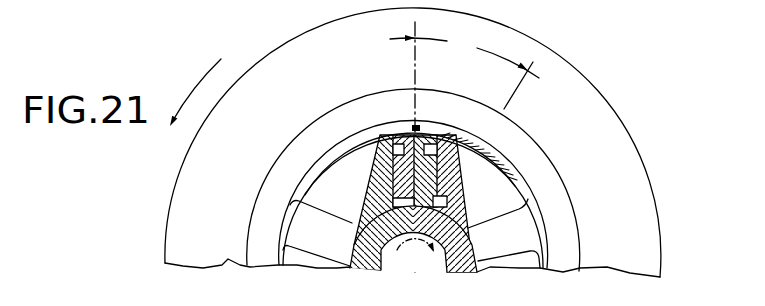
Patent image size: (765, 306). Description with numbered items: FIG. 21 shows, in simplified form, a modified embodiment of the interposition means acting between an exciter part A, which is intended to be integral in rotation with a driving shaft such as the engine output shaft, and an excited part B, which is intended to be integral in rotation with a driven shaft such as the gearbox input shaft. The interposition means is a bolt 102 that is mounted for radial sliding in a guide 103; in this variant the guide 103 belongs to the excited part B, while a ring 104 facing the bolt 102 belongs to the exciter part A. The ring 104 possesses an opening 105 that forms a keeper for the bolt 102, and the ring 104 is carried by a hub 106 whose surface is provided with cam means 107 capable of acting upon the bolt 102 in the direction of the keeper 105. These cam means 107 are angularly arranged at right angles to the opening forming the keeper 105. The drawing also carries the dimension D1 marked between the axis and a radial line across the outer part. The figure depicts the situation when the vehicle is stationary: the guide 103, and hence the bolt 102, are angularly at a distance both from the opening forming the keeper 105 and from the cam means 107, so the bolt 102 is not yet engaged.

The bolt 102 is at (417, 124).
The guide 103 is at (461, 150).
The ring 104 is at (350, 132).
The opening forming a keeper 105 is at (490, 146).
The hub 106 is at (373, 253).
The cam means 107 is at (448, 201).
The exciter part A is at (631, 141).
The excited part B is at (549, 250).
The diameter D1 is at (464, 70).